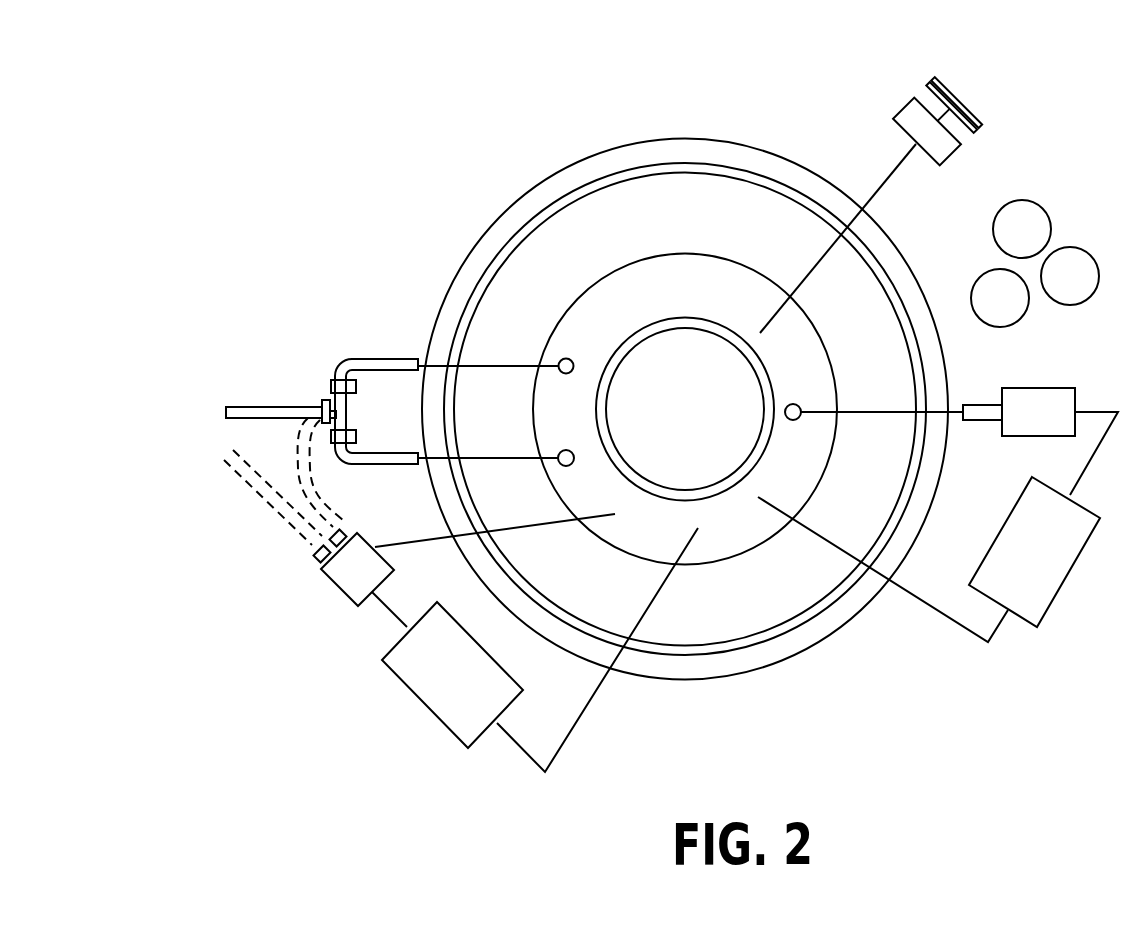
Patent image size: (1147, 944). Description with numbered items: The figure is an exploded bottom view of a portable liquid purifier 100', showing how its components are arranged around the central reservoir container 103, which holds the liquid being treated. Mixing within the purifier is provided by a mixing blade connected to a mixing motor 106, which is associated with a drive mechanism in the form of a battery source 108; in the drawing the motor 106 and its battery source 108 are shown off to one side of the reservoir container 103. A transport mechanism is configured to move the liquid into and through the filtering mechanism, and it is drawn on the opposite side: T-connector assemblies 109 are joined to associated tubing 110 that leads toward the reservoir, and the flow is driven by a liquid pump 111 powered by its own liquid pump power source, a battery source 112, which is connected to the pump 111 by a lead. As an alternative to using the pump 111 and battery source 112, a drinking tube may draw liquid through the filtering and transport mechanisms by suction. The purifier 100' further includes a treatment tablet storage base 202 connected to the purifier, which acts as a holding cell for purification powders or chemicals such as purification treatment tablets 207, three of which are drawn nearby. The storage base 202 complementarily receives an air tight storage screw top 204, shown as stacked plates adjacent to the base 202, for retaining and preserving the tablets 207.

The portable liquid purifier 100' is at (294, 85).
The reservoir container 103 is at (572, 177).
The mixing motor 106 is at (1062, 408).
The battery source 108 is at (1063, 563).
The T-connector assemblies 109 is at (333, 380).
The tubing 110 is at (362, 365).
The liquid pump 111 is at (343, 586).
The battery source 112 is at (445, 703).
The treatment tablet storage base 202 is at (943, 148).
The air tight storage screw top 204 is at (967, 103).
The purification treatment tablets 207 is at (1083, 272).